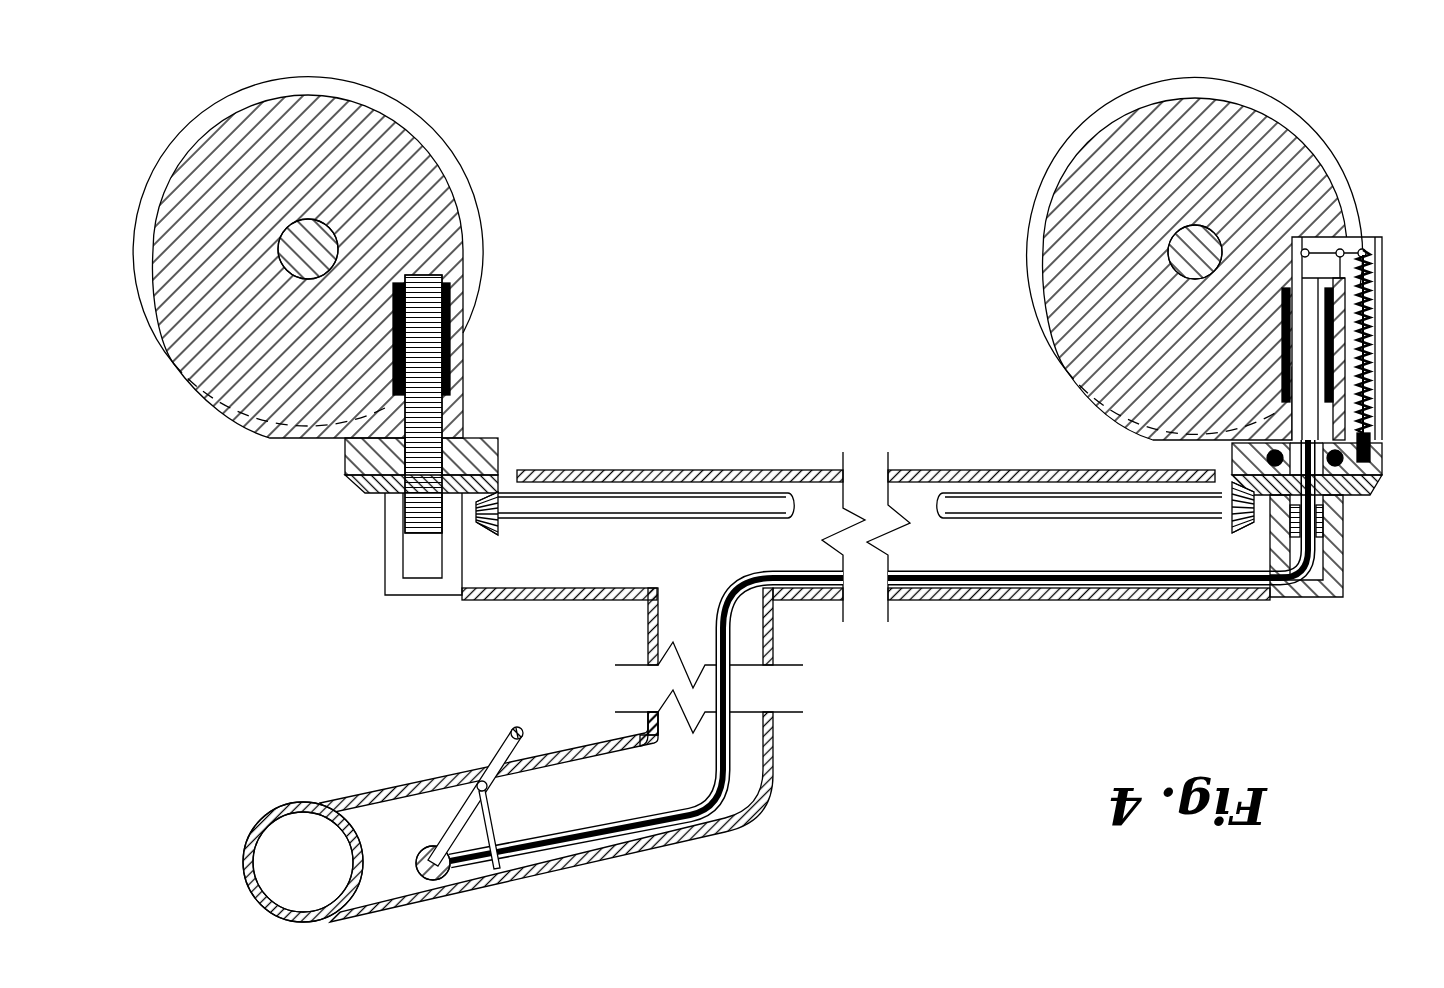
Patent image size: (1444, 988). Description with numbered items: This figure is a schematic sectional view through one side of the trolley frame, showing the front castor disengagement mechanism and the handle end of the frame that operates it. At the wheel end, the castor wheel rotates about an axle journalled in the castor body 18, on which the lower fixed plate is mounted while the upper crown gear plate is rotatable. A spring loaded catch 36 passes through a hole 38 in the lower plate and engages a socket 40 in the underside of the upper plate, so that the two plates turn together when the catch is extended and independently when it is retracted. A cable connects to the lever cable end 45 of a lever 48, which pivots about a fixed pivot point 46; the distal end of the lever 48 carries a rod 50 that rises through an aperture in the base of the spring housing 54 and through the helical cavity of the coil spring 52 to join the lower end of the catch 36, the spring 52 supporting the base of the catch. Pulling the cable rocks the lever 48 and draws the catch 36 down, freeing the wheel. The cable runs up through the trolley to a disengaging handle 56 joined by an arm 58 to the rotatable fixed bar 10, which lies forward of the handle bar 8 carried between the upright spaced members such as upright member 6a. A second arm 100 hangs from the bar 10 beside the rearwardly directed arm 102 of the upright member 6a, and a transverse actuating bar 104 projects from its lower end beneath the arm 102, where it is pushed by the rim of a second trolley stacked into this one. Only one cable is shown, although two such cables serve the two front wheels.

The upright spaced member 6a is at (650, 622).
The handle bar 8 is at (258, 893).
The disengaging bar 10 is at (467, 772).
The castor body 18 is at (1093, 405).
The spring loaded catch 36 is at (1382, 476).
The hole 38 is at (1375, 447).
The socket 40 is at (1372, 483).
The lever cable end 45 is at (1312, 252).
The pivot point 46 is at (1342, 252).
The lever 48 is at (1365, 255).
The rod 50 is at (1370, 353).
The coil spring 52 is at (1367, 395).
The spring housing 54 is at (1382, 296).
The disengaging handle 56 is at (440, 873).
The arm 58 is at (455, 825).
The second arm 100 is at (502, 740).
The rearwardly directed arm 102 is at (677, 847).
The transverse actuating bar 104 is at (515, 727).